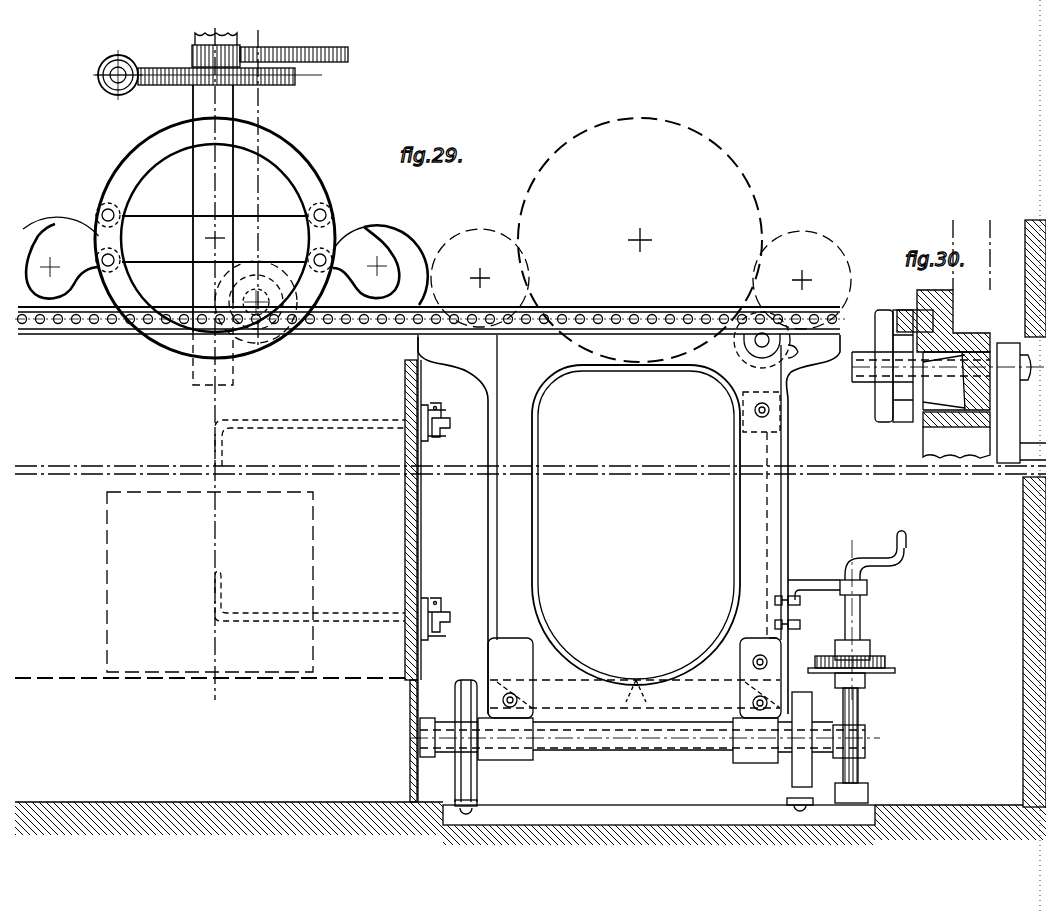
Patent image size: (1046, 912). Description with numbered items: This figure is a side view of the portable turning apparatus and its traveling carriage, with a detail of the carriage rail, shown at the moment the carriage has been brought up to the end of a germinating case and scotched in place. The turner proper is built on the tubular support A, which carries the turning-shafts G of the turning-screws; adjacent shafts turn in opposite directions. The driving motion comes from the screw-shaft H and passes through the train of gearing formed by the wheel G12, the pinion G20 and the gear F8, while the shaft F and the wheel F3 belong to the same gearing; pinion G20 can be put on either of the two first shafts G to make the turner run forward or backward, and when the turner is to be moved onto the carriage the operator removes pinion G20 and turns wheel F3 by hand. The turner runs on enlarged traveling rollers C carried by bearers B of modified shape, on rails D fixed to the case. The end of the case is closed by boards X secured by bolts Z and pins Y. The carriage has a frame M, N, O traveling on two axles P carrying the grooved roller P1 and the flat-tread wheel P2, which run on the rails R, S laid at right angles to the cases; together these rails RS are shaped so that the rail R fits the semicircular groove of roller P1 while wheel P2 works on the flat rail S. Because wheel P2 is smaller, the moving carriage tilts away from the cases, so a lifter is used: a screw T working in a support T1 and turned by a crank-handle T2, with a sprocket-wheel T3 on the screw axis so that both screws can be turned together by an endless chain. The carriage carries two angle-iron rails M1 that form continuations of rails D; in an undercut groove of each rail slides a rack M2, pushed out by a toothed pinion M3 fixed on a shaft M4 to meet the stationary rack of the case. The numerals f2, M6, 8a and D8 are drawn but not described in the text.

In FIG. 29, the tubular support A is at (431, 240).
In FIG. 29, the bearers B is at (211, 257).
In FIG. 29, the traveling rollers C is at (592, 271).
In FIG. 29, the rails on the case D is at (430, 330).
In FIG. 29, the shaft F is at (219, 235).
In FIG. 29, the wheel F3 is at (348, 52).
In FIG. 29, the gear F8 is at (256, 294).
In FIG. 29, the turning-shaft G is at (210, 582).
In FIG. 29, the wheel G12 is at (217, 86).
In FIG. 29, the pinion G20 is at (194, 50).
In FIG. 29, the hand wheel f2 is at (97, 75).
In FIG. 29, the screw-shaft H is at (118, 75).
In FIG. 29, the carriage frame M is at (629, 549).
In FIG. 30, the carriage frame M is at (889, 424).
In FIG. 30, the angle-iron rails M1 is at (953, 321).
In FIG. 29, the sliding rack M2 is at (634, 315).
In FIG. 30, the sliding rack M2 is at (915, 321).
In FIG. 29, the toothed pinion M3 is at (792, 350).
In FIG. 29, the shaft M4 is at (762, 339).
In FIG. 30, the shaft M4 is at (858, 360).
In FIG. 30, the nut M6 is at (1021, 403).
In FIG. 29, the pivot circle 8a is at (755, 340).
In FIG. 29, the boards X is at (403, 568).
In FIG. 29, the pins Y is at (435, 523).
In FIG. 29, the bolts Z is at (310, 511).
In FIG. 29, the floor line D8 is at (290, 680).
In FIG. 29, the carriage frame N is at (784, 535).
In FIG. 29, the carriage frame O is at (642, 691).
In FIG. 29, the axle P is at (645, 739).
In FIG. 29, the grooved roller P1 is at (468, 776).
In FIG. 29, the flat-tread wheel P2 is at (793, 739).
In FIG. 29, the rail R is at (456, 800).
In FIG. 29, the rails RS is at (659, 815).
In FIG. 29, the flat rail S is at (813, 800).
In FIG. 29, the screw T is at (853, 745).
In FIG. 29, the support T1 is at (807, 597).
In FIG. 29, the crank-handle T2 is at (885, 613).
In FIG. 29, the sprocket-wheel T3 is at (851, 641).